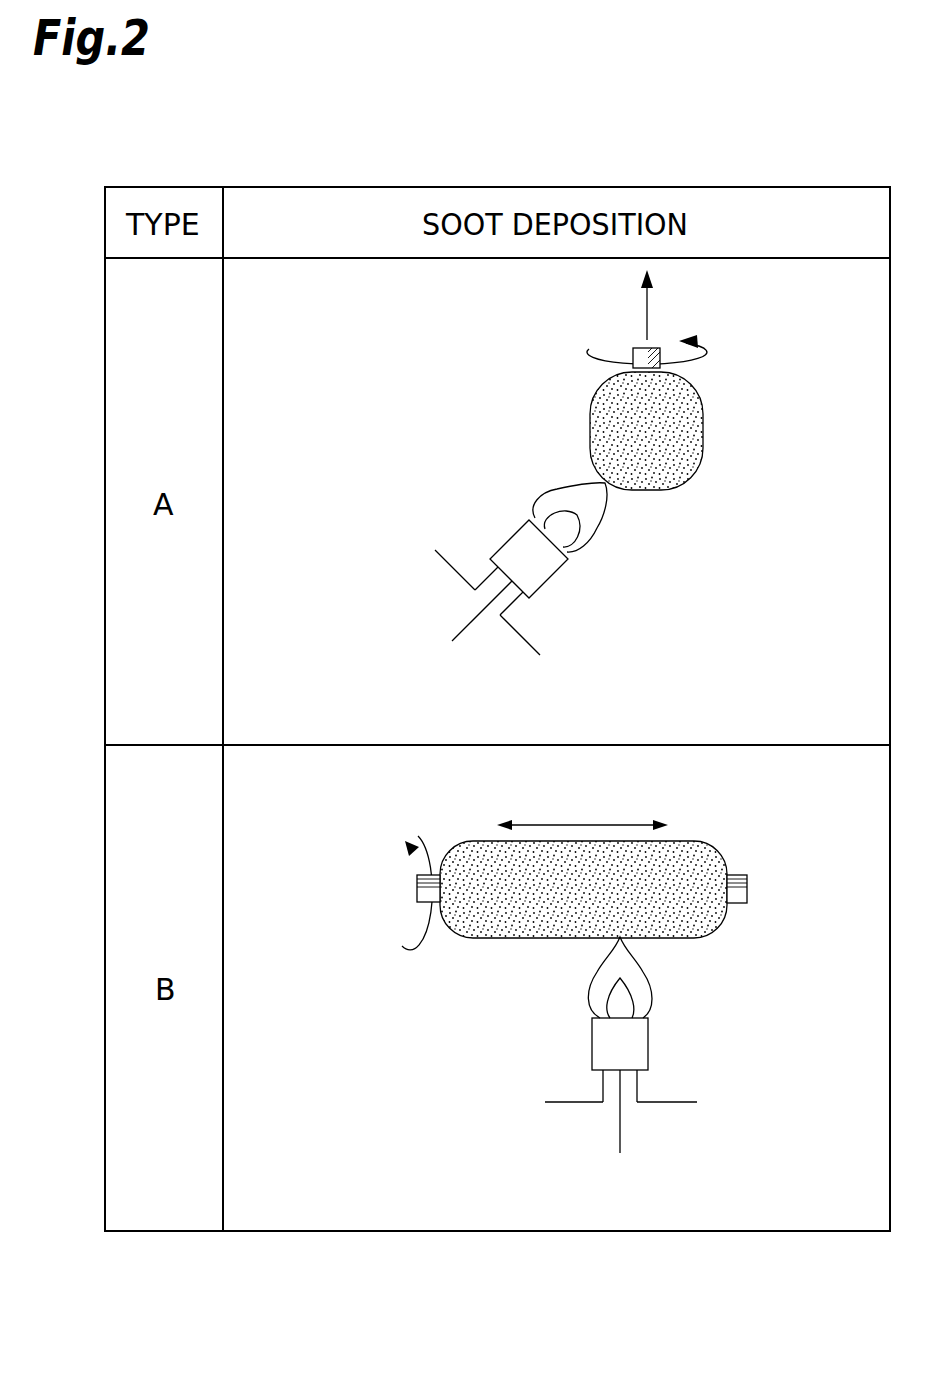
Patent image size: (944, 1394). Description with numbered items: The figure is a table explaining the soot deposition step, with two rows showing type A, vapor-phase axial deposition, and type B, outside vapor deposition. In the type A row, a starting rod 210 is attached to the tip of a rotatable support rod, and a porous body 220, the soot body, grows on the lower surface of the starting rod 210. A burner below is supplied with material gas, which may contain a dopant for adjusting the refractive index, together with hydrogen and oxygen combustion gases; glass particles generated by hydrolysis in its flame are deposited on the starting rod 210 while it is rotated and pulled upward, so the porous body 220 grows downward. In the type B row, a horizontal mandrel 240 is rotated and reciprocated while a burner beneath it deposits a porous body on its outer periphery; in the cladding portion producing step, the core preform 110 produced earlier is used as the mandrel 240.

The starting rod 210 is at (640, 348).
The porous body 220 is at (703, 432).
The mandrel 240 is at (633, 874).
The core preform 110 is at (735, 873).